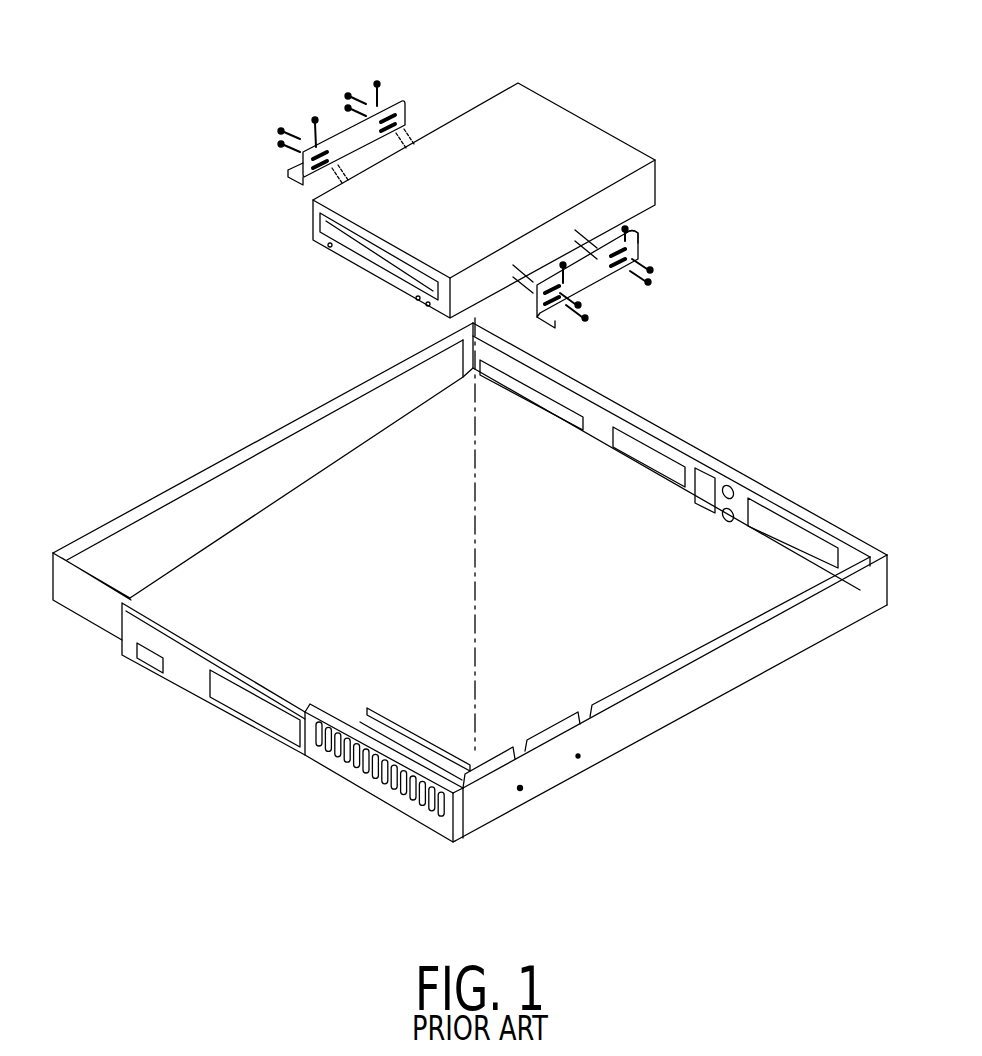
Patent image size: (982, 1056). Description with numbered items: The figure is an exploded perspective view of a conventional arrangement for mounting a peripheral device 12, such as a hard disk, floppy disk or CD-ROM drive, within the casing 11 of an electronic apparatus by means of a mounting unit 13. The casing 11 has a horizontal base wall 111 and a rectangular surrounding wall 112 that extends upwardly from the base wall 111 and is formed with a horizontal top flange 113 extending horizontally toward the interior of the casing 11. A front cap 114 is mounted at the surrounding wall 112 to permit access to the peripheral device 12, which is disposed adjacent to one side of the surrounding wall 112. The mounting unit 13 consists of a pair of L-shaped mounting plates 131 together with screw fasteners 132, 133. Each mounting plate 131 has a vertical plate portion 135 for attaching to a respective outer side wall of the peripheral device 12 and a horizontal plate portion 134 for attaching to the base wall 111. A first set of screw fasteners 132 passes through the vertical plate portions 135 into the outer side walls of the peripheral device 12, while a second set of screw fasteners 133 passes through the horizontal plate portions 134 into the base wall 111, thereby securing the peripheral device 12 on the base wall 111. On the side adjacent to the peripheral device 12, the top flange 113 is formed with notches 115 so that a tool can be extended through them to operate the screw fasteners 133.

The casing 11 is at (733, 458).
The horizontal base wall 111 is at (673, 622).
The rectangular surrounding wall 112 is at (557, 768).
The horizontal top flange 113 is at (623, 703).
The front cap 114 is at (385, 745).
The notches 115 is at (625, 705).
The peripheral device 12 is at (550, 142).
The mounting unit 13 is at (405, 99).
The L-shaped mounting plates 131 is at (407, 112).
The first set of screw fasteners 132 is at (647, 263).
The second set of screw fasteners 133 is at (377, 82).
The horizontal plate portion 134 is at (563, 318).
The vertical plate portion 135 is at (640, 236).